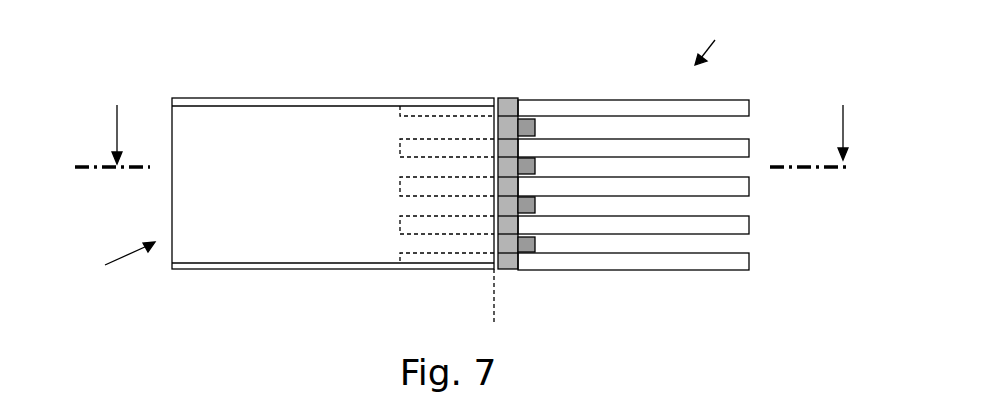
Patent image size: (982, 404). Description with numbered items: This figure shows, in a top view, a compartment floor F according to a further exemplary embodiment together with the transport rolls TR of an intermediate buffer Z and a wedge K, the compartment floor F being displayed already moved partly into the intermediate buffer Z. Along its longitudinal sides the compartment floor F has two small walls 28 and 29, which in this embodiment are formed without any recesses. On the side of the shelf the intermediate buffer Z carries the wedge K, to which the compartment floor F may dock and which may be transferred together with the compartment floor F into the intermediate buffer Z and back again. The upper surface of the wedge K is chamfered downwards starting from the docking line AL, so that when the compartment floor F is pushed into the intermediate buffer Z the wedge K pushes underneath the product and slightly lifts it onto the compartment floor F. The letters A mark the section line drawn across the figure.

The small wall 28 is at (267, 105).
The small wall 29 is at (321, 268).
The wedge K is at (509, 122).
The transport rolls TR is at (737, 108).
The docking line AL is at (536, 296).
The section line A- A is at (461, 136).
The compartment floor F is at (120, 262).
The intermediate buffer Z is at (711, 40).